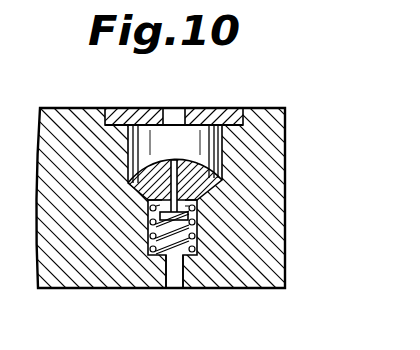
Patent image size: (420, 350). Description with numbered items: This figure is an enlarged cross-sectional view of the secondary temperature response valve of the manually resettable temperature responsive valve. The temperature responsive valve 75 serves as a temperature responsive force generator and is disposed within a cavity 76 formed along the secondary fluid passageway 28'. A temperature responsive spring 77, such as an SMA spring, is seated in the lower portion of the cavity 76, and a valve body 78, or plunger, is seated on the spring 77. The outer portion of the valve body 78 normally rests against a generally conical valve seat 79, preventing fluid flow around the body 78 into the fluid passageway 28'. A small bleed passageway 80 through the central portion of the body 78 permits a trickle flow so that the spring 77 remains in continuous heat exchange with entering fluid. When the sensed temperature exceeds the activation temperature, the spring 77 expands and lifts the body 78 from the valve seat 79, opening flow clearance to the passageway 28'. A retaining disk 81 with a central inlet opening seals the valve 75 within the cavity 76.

The retaining disk 81 is at (214, 96).
The cavity 76 is at (214, 141).
The bleed passageway 80 is at (216, 170).
The valve body 78 is at (130, 183).
The valve seat 79 is at (140, 192).
The temperature responsive valve 75 is at (148, 236).
The temperature responsive spring 77 is at (197, 232).
The secondary fluid passageway 28' is at (201, 295).